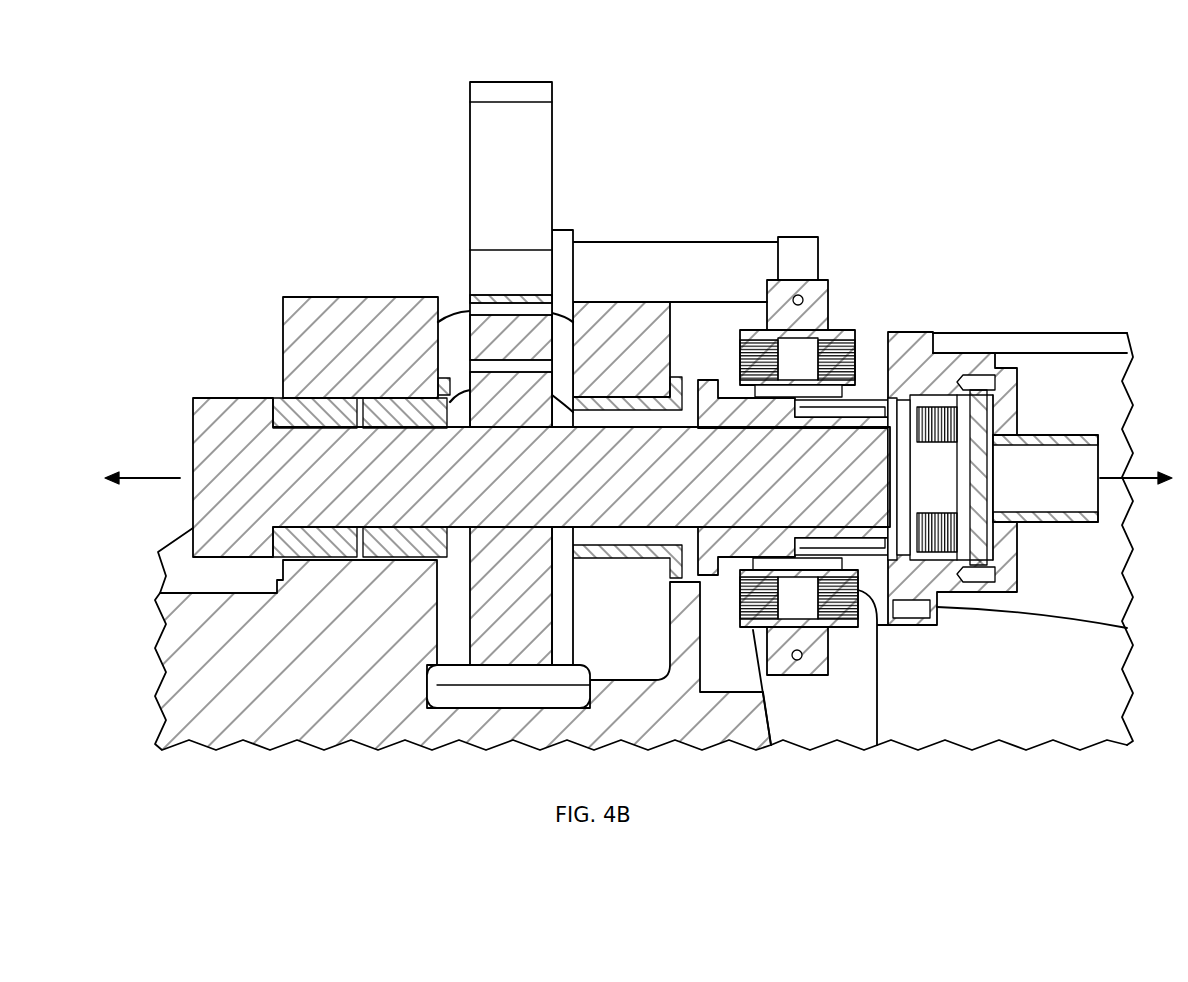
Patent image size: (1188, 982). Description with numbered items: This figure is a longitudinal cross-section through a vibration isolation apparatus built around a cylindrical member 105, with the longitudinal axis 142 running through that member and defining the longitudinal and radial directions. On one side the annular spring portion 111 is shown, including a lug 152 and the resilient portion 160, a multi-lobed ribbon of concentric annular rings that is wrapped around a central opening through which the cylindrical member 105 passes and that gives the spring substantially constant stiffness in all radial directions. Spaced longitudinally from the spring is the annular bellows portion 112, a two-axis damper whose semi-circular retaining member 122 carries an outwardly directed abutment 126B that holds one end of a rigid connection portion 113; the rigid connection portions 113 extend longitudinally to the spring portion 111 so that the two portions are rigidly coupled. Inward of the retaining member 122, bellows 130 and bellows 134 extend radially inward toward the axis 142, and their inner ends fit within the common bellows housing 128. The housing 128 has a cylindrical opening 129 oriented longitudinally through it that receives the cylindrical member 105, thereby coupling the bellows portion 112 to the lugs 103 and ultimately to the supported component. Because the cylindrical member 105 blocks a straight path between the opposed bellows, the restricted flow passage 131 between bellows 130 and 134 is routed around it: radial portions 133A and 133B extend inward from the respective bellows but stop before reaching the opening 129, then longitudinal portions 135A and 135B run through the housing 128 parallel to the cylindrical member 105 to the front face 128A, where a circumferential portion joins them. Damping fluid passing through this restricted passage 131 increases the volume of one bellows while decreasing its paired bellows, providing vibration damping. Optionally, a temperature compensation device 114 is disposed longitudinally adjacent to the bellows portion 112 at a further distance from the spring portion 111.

The lugs 103 is at (372, 308).
The cylindrical member 105 is at (235, 398).
The annular spring portion 111 is at (482, 370).
The annular bellows portion 112 is at (822, 298).
The rigid connection portions 113 is at (715, 246).
The temperature compensation device 114 is at (958, 375).
The retaining member 122 is at (832, 278).
The outwardly directed abutment 126B is at (800, 237).
The bellows housing 128 is at (747, 405).
The front face 128A is at (900, 396).
The cylindrical opening 129 is at (718, 420).
The bellows 130 is at (813, 648).
The restricted flow passage 131 is at (868, 402).
The radial portion 133A is at (796, 545).
The radial portion 133B is at (796, 410).
The bellows 134 is at (818, 327).
The longitudinal portion 135A is at (845, 545).
The longitudinal portion 135B is at (840, 420).
The longitudinal axis 142 is at (646, 455).
The lug 152 is at (523, 82).
The resilient portion 160 is at (484, 598).